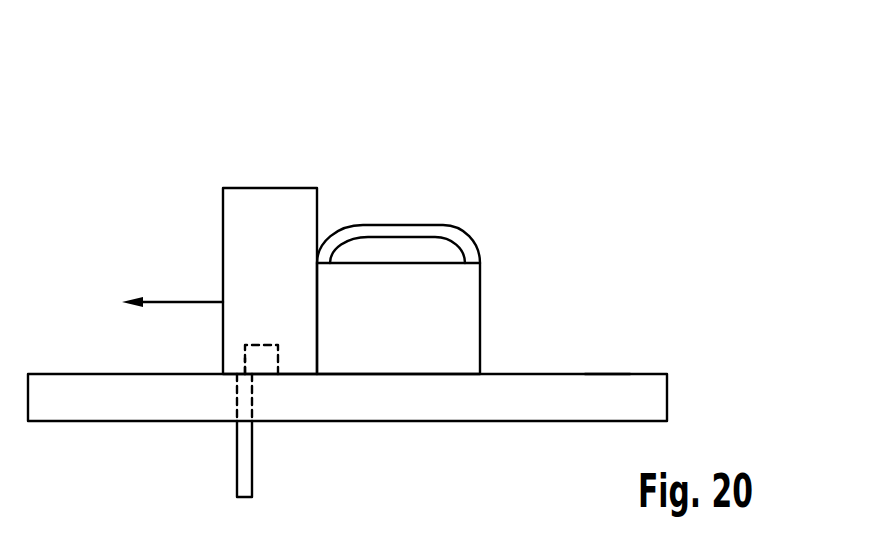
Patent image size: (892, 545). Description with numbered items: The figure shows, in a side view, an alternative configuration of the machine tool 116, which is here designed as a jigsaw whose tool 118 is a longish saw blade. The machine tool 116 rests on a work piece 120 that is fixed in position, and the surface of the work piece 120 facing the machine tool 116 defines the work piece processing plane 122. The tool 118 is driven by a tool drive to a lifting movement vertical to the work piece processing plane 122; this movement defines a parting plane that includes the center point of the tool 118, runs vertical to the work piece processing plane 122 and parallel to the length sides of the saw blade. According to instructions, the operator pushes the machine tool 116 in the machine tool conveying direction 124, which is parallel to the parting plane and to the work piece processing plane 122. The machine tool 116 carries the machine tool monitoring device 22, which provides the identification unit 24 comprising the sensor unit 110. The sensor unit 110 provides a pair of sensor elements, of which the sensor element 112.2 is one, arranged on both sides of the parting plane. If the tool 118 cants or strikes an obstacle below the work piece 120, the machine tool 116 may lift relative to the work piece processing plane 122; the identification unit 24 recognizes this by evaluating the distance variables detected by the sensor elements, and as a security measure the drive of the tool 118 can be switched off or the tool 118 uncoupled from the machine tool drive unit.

The machine tool monitoring device 22 is at (269, 330).
The identification unit 24 is at (302, 350).
The sensor unit 110 is at (282, 360).
The sensor element 112.2 is at (253, 358).
The machine tool 116 is at (459, 170).
The tool 118 is at (244, 473).
The work piece 120 is at (657, 398).
The work piece processing plane 122 is at (608, 372).
The machine tool conveying direction 124 is at (160, 302).